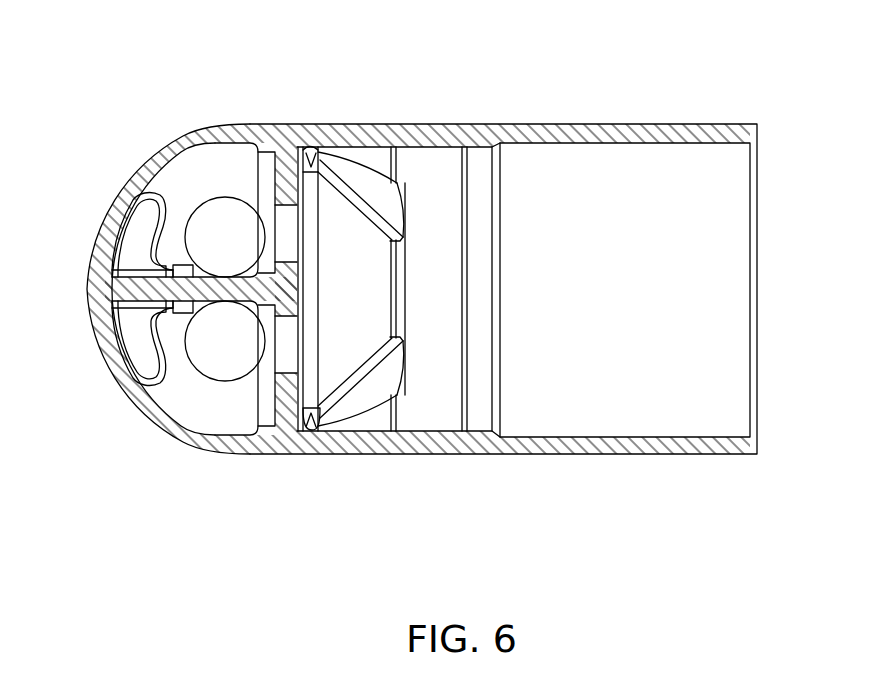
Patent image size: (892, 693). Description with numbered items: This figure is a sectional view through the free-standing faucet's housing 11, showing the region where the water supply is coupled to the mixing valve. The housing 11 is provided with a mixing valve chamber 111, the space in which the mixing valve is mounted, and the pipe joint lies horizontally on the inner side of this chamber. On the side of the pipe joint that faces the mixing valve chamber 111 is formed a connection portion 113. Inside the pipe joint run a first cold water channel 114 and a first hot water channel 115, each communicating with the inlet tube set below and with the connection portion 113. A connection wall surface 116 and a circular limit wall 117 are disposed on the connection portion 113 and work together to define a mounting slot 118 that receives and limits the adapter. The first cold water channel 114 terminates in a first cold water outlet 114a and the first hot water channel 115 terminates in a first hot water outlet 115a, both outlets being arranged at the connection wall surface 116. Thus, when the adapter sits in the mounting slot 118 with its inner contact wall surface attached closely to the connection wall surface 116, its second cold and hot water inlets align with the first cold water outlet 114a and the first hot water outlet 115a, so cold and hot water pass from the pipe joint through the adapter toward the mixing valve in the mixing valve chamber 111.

The housing 11 is at (479, 100).
The mixing valve chamber 111 is at (627, 126).
The connection portion 113 is at (303, 297).
The first cold water channel 114 is at (220, 357).
The first cold water outlet 114a is at (282, 360).
The first hot water channel 115 is at (217, 230).
The first hot water outlet 115a is at (280, 217).
The connection wall surface 116 is at (300, 190).
The circular limit wall 117 is at (318, 150).
The mounting slot 118 is at (303, 352).